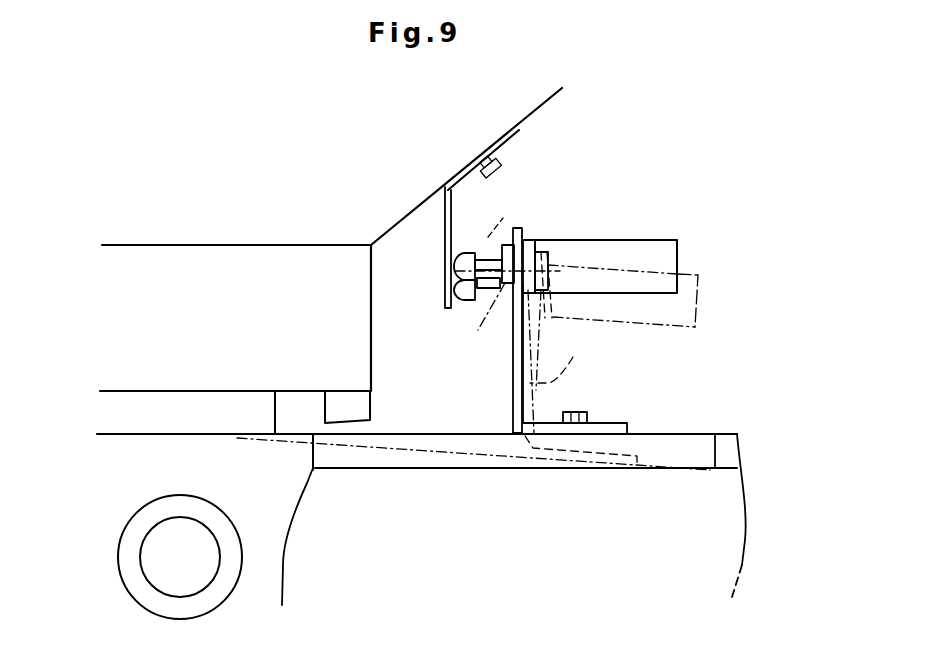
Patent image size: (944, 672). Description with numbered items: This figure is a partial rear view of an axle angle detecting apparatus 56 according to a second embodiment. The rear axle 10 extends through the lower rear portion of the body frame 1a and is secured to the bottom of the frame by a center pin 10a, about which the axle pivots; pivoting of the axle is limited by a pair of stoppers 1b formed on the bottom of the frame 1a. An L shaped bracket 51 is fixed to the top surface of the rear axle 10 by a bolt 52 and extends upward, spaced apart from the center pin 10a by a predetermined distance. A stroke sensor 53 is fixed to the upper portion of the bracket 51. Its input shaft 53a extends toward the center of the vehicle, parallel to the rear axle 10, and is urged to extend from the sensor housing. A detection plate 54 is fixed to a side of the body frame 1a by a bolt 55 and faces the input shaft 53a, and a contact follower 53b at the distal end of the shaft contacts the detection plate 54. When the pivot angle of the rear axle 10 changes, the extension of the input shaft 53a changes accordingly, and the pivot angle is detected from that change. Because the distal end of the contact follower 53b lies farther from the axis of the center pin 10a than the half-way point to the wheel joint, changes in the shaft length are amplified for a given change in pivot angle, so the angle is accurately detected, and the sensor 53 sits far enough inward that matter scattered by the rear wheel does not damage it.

The body frame 1a is at (537, 109).
The stopper 1b is at (371, 403).
The rear axle 10 is at (688, 434).
The center pin 10a is at (150, 555).
The L shaped bracket 51 is at (518, 345).
The bolt 52 is at (577, 413).
The stroke sensor 53 is at (698, 305).
The input shaft 53a is at (490, 298).
The contact follower 53b is at (460, 253).
The detection plate 54 is at (445, 255).
The bolt 55 is at (503, 170).
The axle angle detecting apparatus 56 is at (661, 214).